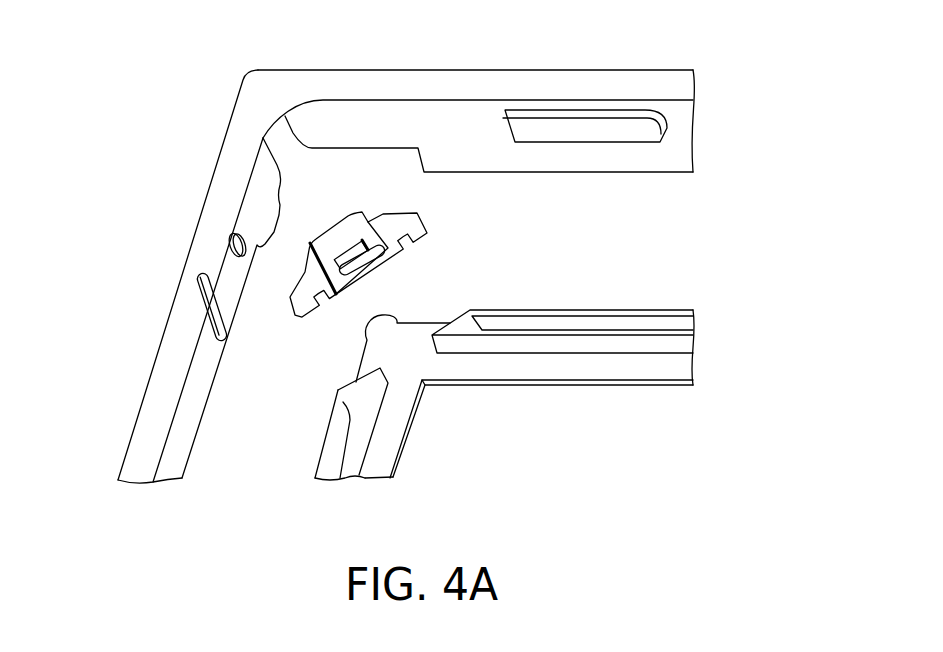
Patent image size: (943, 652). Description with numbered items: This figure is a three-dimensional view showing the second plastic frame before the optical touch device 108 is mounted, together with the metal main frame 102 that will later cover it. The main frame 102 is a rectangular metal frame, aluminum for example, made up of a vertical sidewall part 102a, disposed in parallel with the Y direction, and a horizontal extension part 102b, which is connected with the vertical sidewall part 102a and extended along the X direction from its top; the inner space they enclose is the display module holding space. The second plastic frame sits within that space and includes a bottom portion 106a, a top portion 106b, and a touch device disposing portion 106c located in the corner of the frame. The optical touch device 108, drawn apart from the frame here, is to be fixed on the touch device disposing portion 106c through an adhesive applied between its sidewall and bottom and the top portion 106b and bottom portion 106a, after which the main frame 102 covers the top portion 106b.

The main frame 102 is at (82, 157).
The vertical sidewall part 102a is at (258, 207).
The horizontal extension part 102b is at (207, 258).
The optical touch device 108 is at (345, 234).
The bottom portion 106a is at (362, 400).
The top portion 106b is at (388, 418).
The touch device disposing portion 106c is at (402, 343).